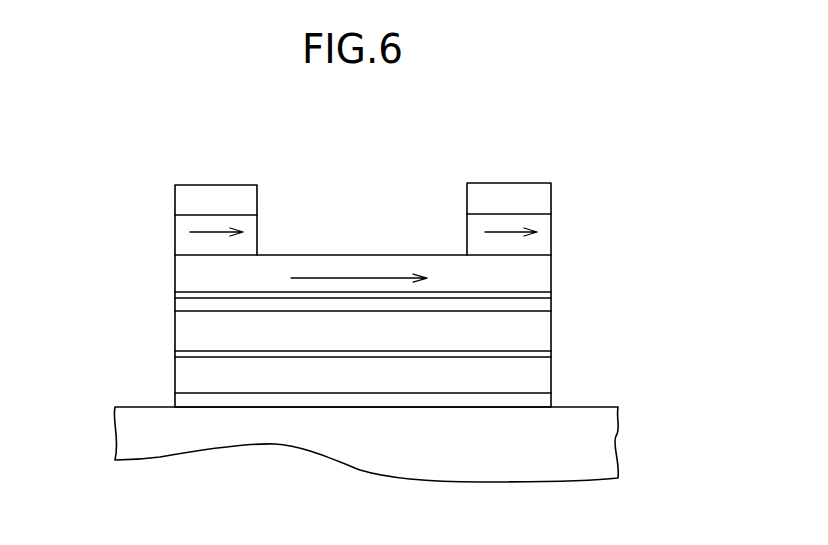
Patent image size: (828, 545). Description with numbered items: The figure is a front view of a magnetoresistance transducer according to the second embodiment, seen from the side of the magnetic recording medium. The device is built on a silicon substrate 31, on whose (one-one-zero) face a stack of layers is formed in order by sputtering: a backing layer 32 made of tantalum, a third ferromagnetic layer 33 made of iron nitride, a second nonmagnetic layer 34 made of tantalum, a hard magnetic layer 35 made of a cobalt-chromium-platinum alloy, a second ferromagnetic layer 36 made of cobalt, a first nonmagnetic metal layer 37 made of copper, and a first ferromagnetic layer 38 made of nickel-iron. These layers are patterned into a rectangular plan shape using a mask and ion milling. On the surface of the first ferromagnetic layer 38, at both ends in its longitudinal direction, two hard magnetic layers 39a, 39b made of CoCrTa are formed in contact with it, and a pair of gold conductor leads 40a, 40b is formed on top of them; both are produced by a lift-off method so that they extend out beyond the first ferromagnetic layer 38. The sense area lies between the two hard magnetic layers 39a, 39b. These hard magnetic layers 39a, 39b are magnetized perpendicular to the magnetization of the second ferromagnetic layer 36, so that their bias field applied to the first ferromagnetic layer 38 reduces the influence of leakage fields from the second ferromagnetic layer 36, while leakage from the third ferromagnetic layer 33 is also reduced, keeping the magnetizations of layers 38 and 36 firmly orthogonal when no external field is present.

The silicon substrate 31 is at (606, 445).
The backing layer 32 is at (545, 399).
The third ferromagnetic layer 33 is at (182, 378).
The second nonmagnetic layer 34 is at (552, 350).
The hard magnetic layer 35 is at (182, 332).
The second ferromagnetic layer 36 is at (545, 305).
The first nonmagnetic metal layer 37 is at (195, 294).
The first ferromagnetic layer 38 is at (540, 276).
The hard magnetic layer 39a is at (174, 228).
The hard magnetic layer 39b is at (548, 236).
The conductor lead 40a is at (232, 190).
The conductor lead 40b is at (514, 194).